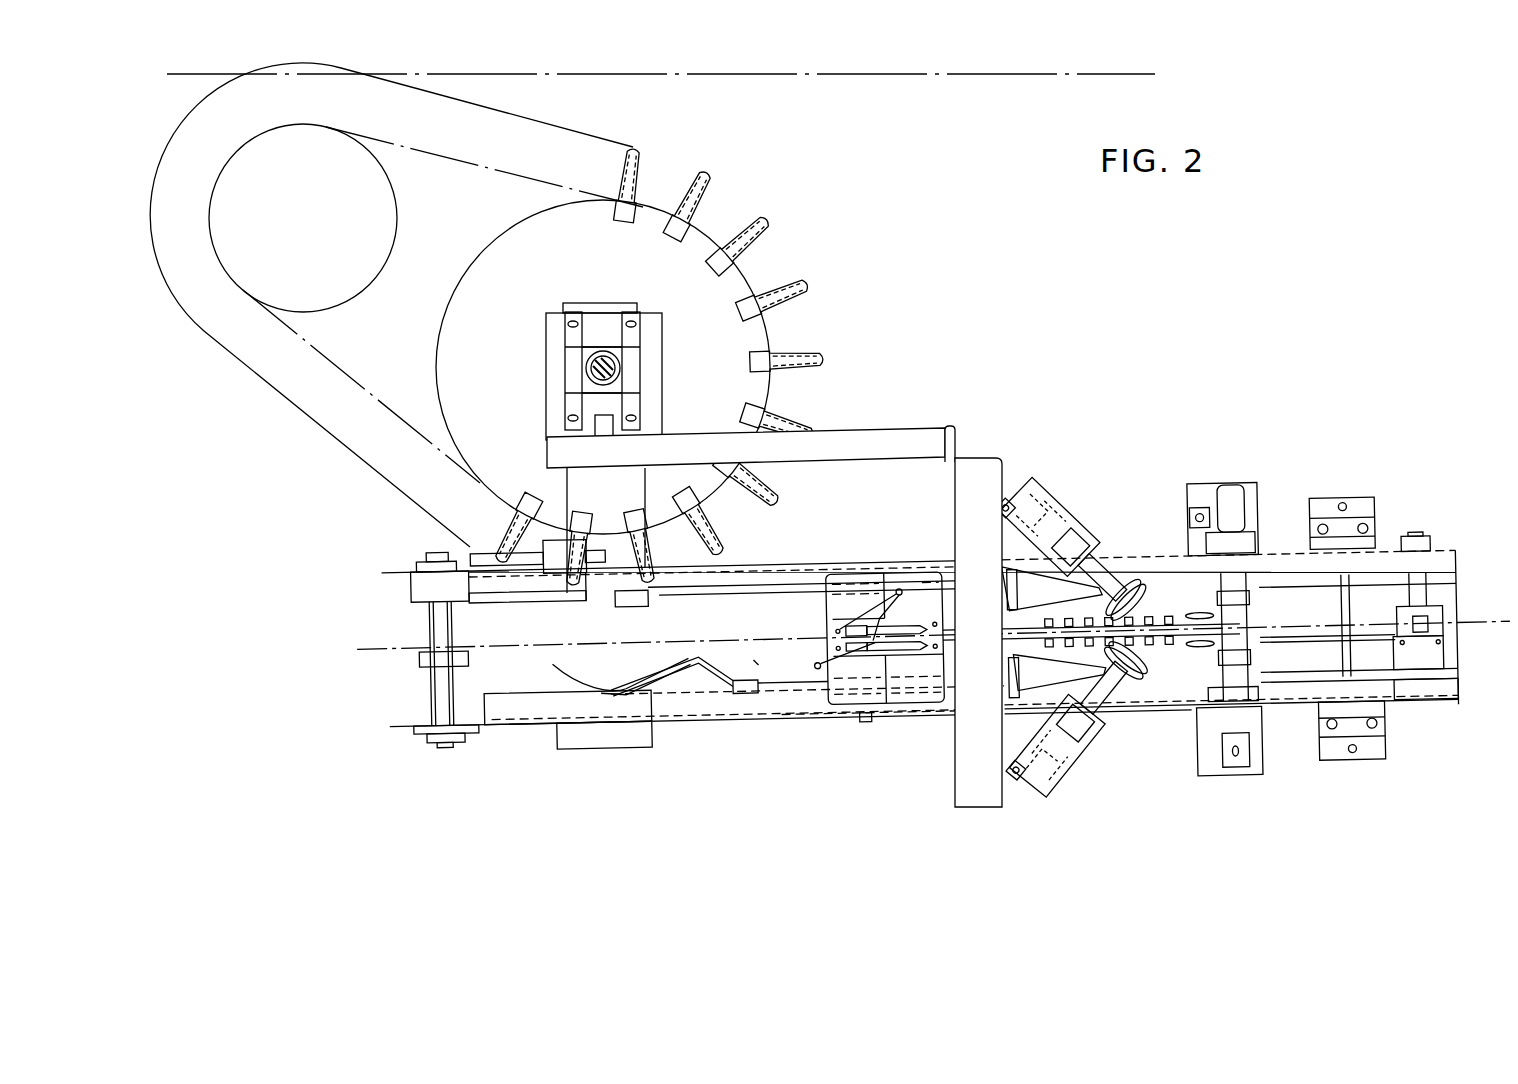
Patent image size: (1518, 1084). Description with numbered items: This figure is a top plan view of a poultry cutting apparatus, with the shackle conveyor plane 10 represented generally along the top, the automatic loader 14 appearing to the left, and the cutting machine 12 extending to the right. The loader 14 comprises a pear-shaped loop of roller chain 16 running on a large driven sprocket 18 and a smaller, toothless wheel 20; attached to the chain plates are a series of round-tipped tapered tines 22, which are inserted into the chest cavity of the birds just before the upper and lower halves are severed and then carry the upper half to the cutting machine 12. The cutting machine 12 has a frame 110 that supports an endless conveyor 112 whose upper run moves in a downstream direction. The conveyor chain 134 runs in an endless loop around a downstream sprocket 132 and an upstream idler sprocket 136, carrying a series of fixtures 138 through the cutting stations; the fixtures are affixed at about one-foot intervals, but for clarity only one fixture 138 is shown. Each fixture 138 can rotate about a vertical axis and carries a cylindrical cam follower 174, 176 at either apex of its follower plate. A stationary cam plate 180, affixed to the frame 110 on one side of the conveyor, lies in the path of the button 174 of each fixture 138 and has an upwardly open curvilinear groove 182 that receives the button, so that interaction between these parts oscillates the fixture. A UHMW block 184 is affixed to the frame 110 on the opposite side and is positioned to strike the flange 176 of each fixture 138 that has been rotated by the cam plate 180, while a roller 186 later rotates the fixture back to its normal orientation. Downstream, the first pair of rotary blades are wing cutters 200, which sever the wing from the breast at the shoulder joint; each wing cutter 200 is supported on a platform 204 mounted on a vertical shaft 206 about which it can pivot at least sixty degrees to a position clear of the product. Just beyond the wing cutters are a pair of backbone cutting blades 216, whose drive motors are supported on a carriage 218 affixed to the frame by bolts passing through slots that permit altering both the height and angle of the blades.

The shackle conveyor plane 10 is at (914, 75).
The cutting machine 12 is at (1145, 739).
The automatic loader 14 is at (352, 485).
The roller chain 16 is at (350, 378).
The large driven sprocket 18 is at (667, 367).
The toothless wheel 20 is at (318, 226).
The round-tipped tapered tines 22 is at (806, 291).
The frame 110 is at (912, 712).
The endless conveyor 112 is at (365, 640).
The downstream sprocket 132 is at (1450, 638).
The conveyor chain 134 is at (748, 652).
The upstream idler sprocket 136 is at (410, 641).
The fixture 138 is at (907, 617).
The cam follower 174 is at (898, 589).
The cam follower 176 is at (815, 667).
The stationary cam plate 180 is at (665, 650).
The curvilinear groove 182 is at (705, 654).
The UHMW block 184 is at (622, 600).
The roller 186 is at (745, 692).
The wing cutters 200 is at (1157, 592).
The platform 204 is at (1041, 484).
The vertical shaft 206 is at (1062, 496).
The backbone cutting blades 216 is at (1260, 628).
The carriage 218 is at (1278, 533).